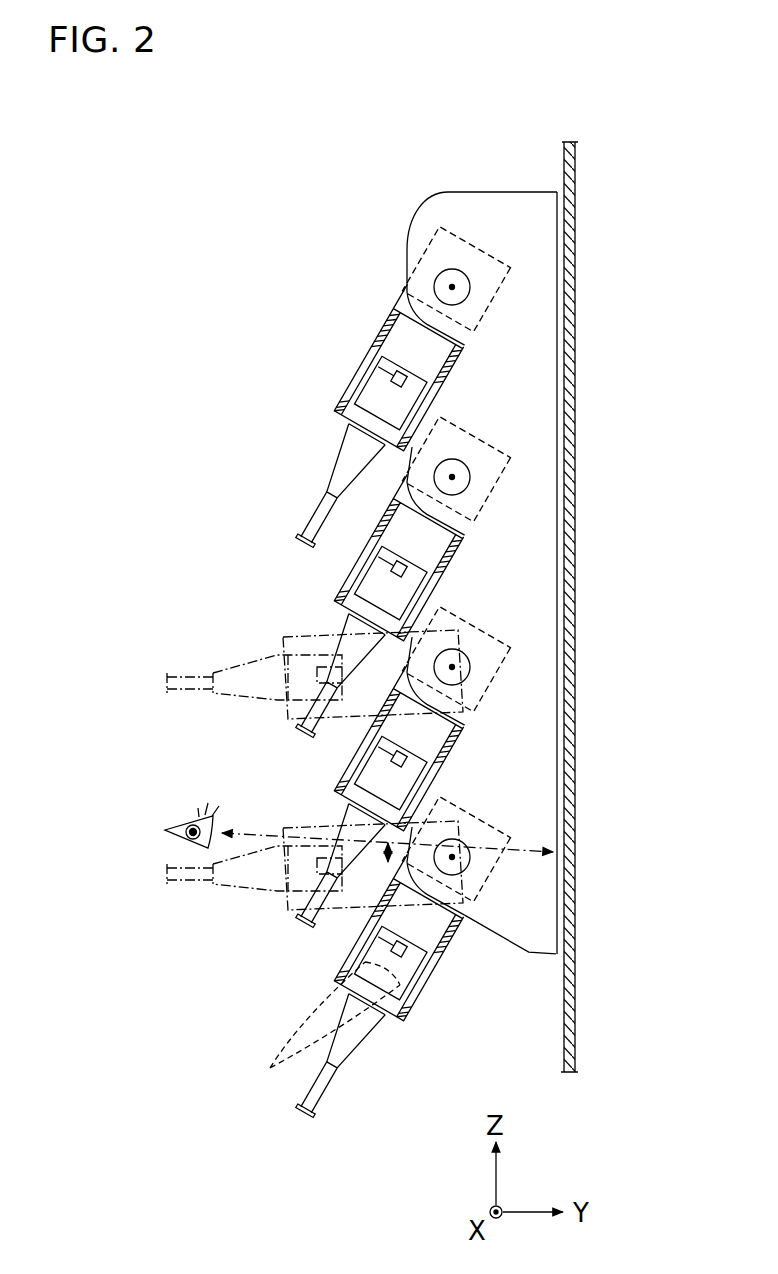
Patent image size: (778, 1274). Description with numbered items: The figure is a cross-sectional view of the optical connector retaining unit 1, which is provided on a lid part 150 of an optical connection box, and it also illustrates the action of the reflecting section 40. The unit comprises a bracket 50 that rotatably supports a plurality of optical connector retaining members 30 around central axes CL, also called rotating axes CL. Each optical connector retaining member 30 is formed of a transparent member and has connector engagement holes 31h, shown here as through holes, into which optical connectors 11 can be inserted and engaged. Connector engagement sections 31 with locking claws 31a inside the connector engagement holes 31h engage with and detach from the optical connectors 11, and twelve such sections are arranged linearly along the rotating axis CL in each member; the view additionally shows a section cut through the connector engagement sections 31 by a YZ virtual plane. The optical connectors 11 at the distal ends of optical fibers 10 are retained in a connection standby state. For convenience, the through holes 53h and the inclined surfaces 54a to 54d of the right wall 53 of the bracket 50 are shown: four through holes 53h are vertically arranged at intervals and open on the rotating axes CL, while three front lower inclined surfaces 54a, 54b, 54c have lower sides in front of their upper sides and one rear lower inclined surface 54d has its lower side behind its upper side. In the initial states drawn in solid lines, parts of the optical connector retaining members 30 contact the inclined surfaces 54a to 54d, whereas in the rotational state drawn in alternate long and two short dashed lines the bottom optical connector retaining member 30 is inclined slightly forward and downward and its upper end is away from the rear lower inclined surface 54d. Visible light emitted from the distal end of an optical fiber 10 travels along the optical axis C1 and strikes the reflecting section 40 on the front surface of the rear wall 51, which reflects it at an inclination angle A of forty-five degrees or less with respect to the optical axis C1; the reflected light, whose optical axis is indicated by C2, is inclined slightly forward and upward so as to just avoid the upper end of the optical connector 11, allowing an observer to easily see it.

The optical connector retaining unit 1 is at (608, 96).
The optical fiber 10 is at (180, 885).
The optical connector 11 is at (297, 907).
The optical connector retaining member 30 is at (499, 249).
The connector engagement section 31 is at (349, 978).
The locking claw 31a is at (272, 1068).
The connector engagement hole 31h is at (340, 998).
The reflecting section 40 is at (552, 782).
The bracket 50 is at (445, 189).
The rear wall 51 is at (563, 193).
The right wall 53 is at (485, 215).
The through hole 53h is at (472, 279).
The front lower inclined surface 54a is at (423, 394).
The front lower inclined surface 54b is at (423, 584).
The front lower inclined surface 54c is at (423, 774).
The rear lower inclined surface 54d is at (490, 930).
The lid part 150 is at (576, 167).
The central axis CL is at (452, 287).
The optical axis C1 is at (383, 856).
The optical axis of reflected light C2 is at (272, 831).
The inclination angle A is at (383, 851).